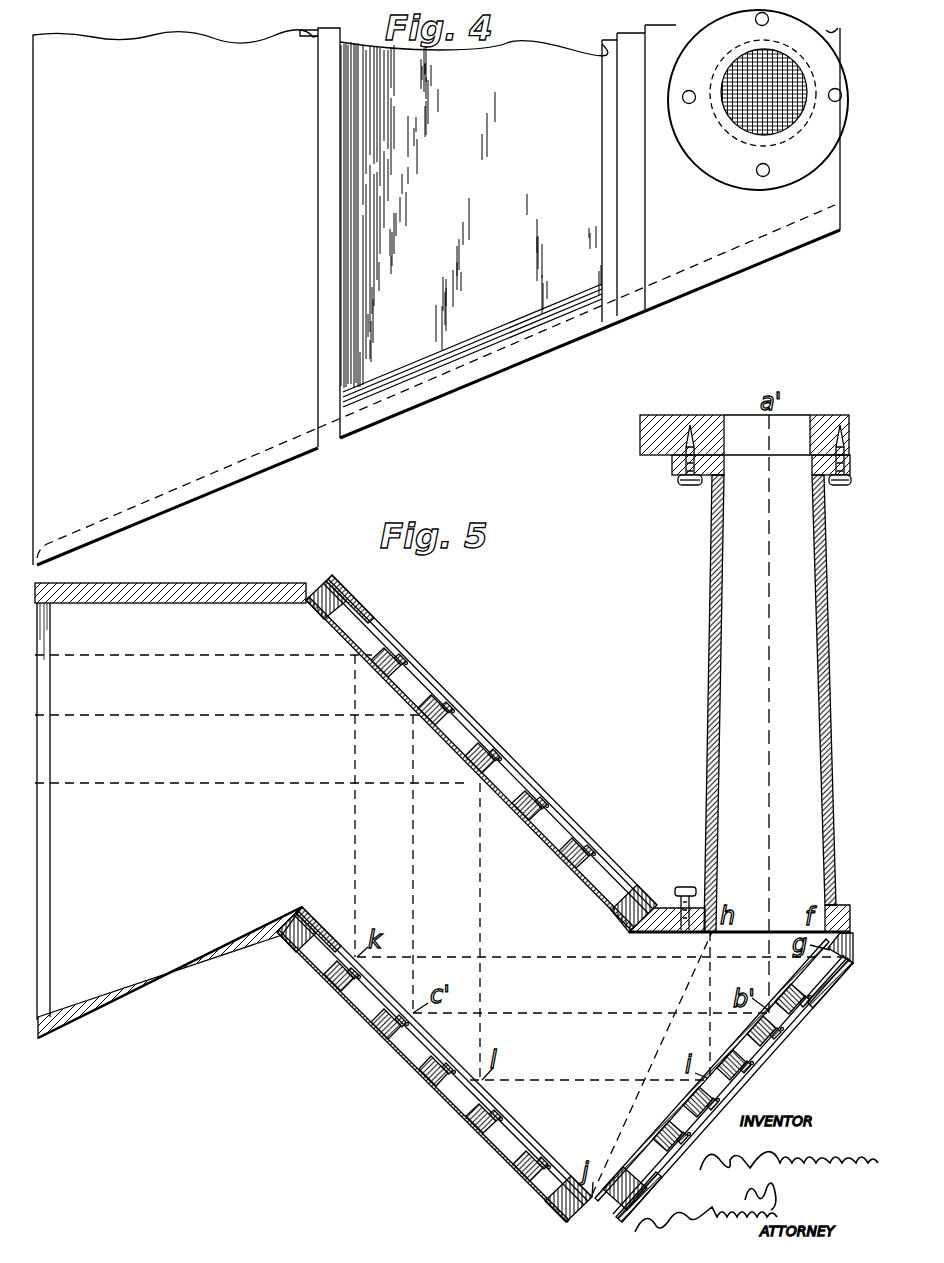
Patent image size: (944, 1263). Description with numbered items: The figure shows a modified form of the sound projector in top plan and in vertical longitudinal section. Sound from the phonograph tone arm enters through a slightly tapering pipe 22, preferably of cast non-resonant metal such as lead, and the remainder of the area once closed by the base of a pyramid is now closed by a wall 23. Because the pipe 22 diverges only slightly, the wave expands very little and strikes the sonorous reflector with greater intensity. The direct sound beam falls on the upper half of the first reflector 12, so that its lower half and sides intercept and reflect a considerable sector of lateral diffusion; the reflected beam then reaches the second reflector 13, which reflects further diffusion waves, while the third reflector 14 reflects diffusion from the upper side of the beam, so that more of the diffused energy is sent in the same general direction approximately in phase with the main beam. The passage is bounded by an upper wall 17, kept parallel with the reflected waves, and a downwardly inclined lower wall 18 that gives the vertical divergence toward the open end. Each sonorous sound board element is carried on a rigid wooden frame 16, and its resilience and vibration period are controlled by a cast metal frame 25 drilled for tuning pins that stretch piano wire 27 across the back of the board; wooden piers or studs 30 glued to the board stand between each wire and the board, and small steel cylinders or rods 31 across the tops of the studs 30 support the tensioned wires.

In FIG. 4, the upper wall 17 is at (175, 297).
In FIG. 5, the upper wall 17 is at (185, 598).
In FIG. 4, the third reflector 14 is at (568, 48).
In FIG. 5, the third reflector 14 is at (512, 767).
In FIG. 4, the frame 16 is at (516, 360).
In FIG. 4, the wall 23 is at (721, 177).
In FIG. 5, the wall 23 is at (665, 908).
In FIG. 4, the tapering pipe 22 is at (733, 133).
In FIG. 5, the tapering pipe 22 is at (710, 618).
In FIG. 4, the first reflector 12 is at (782, 128).
In FIG. 5, the first reflector 12 is at (747, 1063).
In FIG. 5, the lower wall 18 is at (177, 972).
In FIG. 5, the second reflector 13 is at (410, 1067).
In FIG. 5, the cast metal frame 25 is at (372, 626).
In FIG. 5, the wooden piers or studs 30 is at (437, 687).
In FIG. 5, the piano wire 27 is at (592, 838).
In FIG. 5, the steel cylinders or rods 31 is at (487, 733).